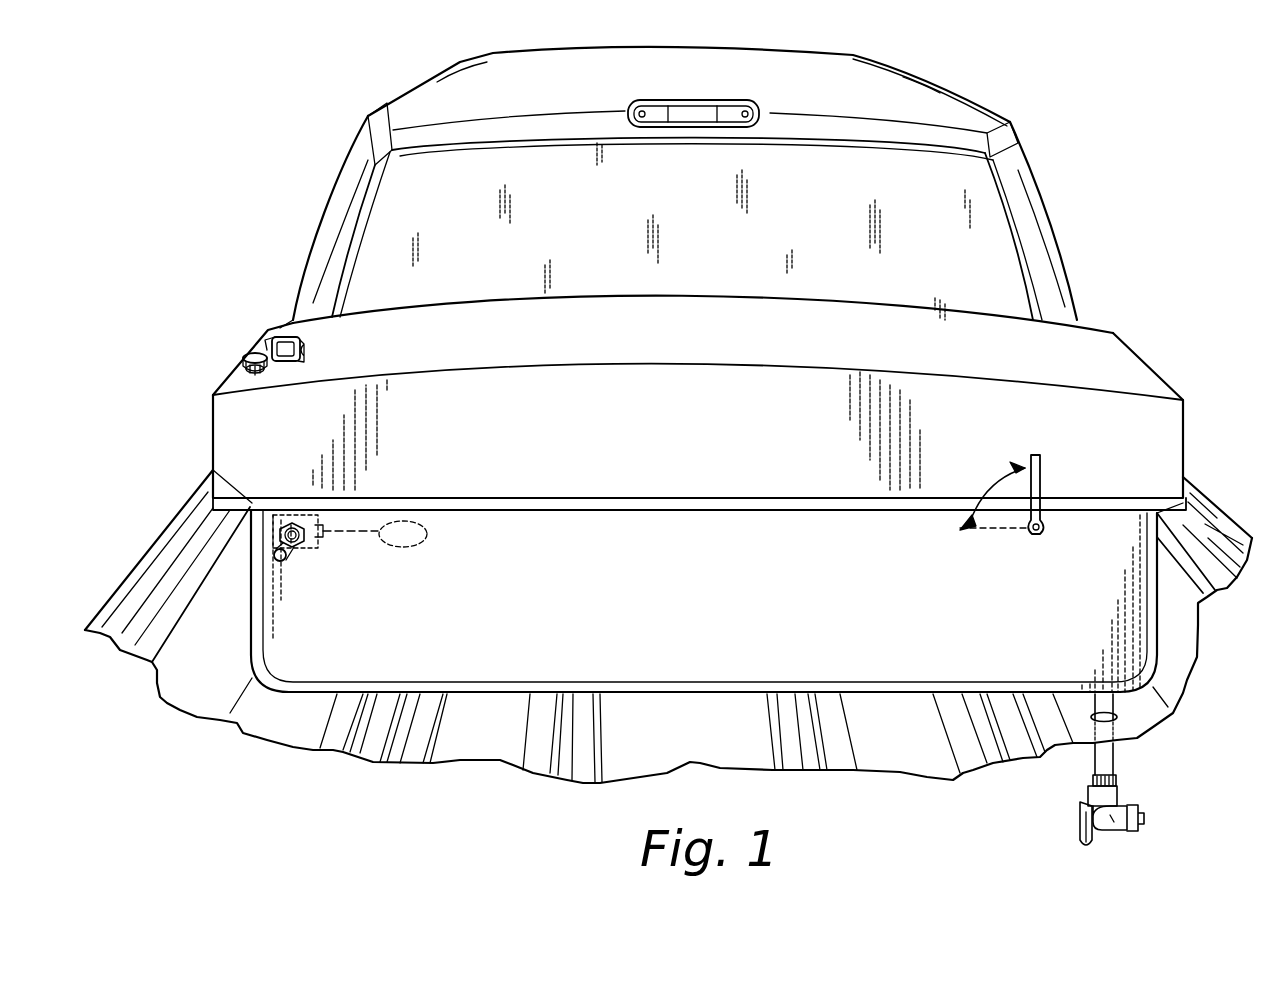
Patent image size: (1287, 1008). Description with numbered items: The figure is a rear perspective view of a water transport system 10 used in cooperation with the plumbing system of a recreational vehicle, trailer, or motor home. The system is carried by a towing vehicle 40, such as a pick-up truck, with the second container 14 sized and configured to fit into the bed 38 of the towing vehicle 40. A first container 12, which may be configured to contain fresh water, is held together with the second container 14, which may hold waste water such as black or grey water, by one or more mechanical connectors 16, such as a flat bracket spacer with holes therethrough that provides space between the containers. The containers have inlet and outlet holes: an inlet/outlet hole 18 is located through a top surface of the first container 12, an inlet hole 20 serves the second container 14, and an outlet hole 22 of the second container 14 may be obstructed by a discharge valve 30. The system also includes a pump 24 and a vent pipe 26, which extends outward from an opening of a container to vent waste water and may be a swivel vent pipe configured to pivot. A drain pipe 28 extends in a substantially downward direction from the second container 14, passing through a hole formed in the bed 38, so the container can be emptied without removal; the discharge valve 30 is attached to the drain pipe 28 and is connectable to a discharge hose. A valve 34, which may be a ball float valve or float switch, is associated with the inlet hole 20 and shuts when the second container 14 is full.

The water transport system 10 is at (200, 330).
The first container 12 is at (1122, 368).
The second container 14 is at (1112, 597).
The mechanical connectors 16 is at (1172, 510).
The inlet/outlet hole 18 is at (253, 377).
The inlet hole 20 is at (283, 560).
The outlet hole 22 is at (1145, 825).
The pump 24 is at (300, 340).
The vent pipe 26 is at (1045, 478).
The drain pipe 28 is at (1108, 763).
The discharge valve 30 is at (1085, 792).
The valve 34 is at (318, 545).
The bed 38 is at (193, 663).
The towing vehicle 40 is at (1085, 220).